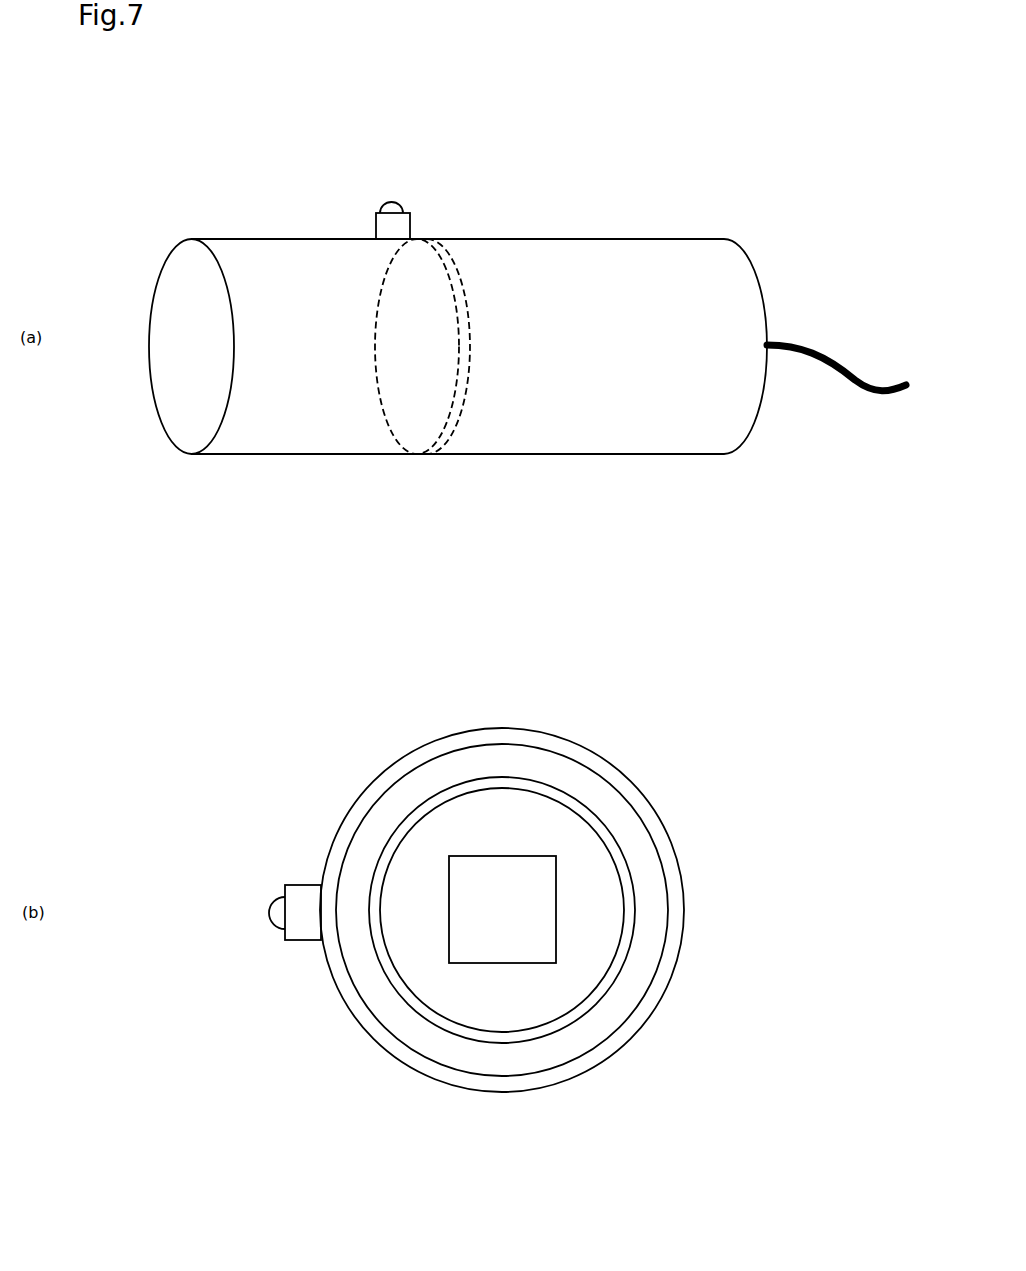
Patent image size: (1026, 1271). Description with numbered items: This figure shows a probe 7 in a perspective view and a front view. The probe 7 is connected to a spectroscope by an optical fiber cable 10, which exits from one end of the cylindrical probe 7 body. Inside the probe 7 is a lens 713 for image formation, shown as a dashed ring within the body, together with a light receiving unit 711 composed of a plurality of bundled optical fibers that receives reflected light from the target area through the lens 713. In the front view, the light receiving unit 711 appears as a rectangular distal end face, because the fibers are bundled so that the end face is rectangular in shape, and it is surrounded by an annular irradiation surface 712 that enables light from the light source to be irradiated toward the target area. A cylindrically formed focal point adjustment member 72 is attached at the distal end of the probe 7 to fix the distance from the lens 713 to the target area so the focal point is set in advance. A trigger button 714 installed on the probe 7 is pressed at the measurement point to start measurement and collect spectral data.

The probe 7 is at (630, 412).
The focal point adjustment member 72 is at (303, 439).
The lens 713 is at (458, 402).
The trigger button 714 is at (398, 207).
The optical fiber cable 10 is at (863, 392).
The light receiving unit 711 is at (464, 917).
The irradiation surface 712 is at (593, 823).